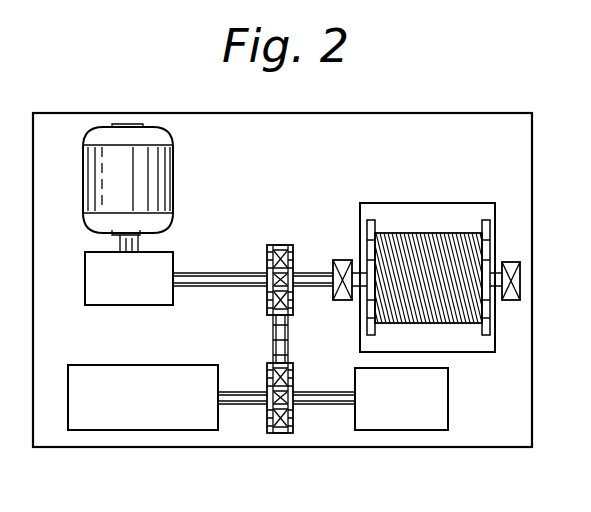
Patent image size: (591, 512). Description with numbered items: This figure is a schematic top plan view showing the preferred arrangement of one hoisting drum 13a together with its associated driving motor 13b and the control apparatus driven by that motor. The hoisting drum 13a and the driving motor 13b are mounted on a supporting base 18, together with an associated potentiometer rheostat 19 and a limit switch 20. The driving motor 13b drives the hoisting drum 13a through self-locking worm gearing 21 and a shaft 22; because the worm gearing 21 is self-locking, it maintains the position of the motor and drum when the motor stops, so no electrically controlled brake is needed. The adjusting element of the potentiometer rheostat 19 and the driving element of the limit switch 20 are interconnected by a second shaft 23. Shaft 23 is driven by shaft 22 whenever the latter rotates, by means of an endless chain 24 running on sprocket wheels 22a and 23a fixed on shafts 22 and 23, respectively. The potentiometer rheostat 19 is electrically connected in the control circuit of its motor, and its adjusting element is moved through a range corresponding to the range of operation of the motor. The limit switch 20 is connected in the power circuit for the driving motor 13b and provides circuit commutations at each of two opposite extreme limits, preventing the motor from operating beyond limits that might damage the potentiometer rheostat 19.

The supporting base 18 is at (429, 125).
The hoisting drum 13a is at (436, 240).
The driving motor 13b is at (163, 176).
The self-locking worm gearing 21 is at (85, 271).
The shaft 22 is at (232, 269).
The sprocket wheel 22a is at (292, 246).
The endless chain 24 is at (273, 344).
The shaft 23 is at (326, 392).
The sprocket wheel 23a is at (269, 427).
The potentiometer rheostat 19 is at (143, 366).
The limit switch 20 is at (452, 399).